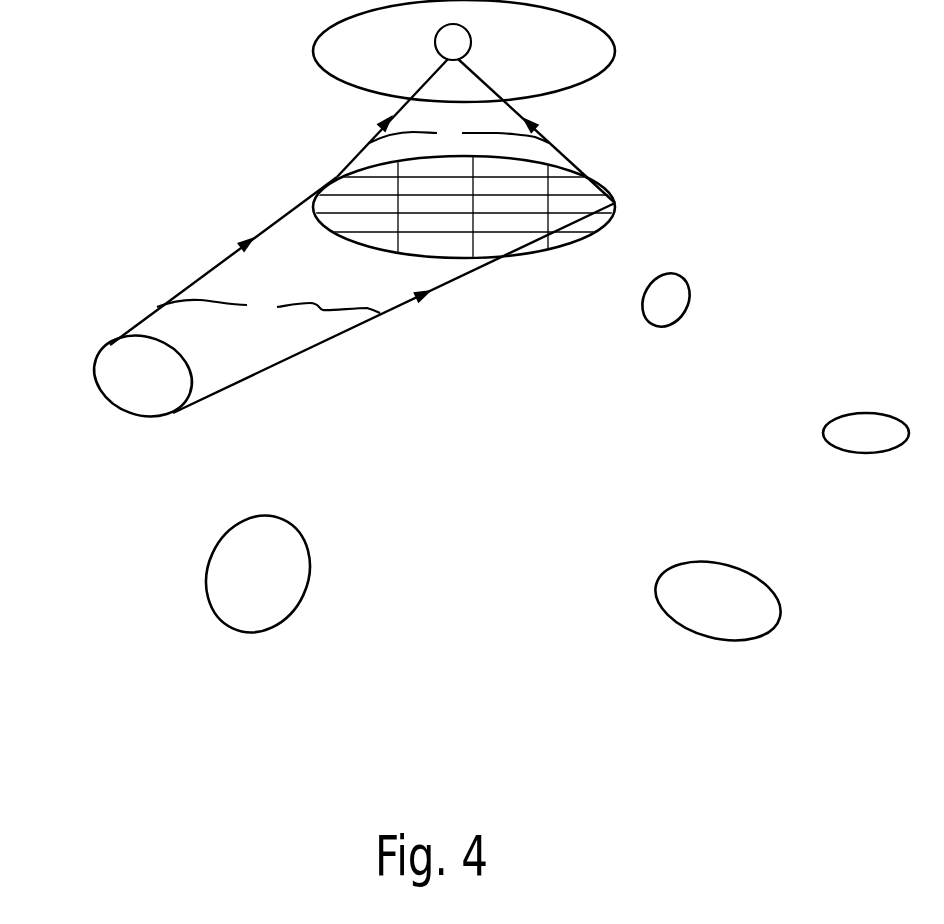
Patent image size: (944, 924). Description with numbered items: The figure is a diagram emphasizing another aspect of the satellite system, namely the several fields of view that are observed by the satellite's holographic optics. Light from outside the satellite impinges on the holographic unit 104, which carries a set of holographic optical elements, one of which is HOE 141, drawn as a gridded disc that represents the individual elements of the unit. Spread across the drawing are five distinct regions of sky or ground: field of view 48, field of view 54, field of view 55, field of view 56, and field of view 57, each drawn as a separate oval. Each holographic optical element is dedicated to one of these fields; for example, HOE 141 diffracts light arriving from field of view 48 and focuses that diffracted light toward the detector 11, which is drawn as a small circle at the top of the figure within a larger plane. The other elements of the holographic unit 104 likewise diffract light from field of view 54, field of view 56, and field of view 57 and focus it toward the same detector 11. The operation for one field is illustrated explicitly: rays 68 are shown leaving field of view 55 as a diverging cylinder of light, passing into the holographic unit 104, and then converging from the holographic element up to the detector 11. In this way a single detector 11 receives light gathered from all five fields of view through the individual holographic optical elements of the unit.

The detector 11 is at (453, 42).
The holographic unit 104 is at (330, 165).
The HOE 141 is at (331, 207).
The rays 68 is at (353, 220).
The field of view 55 is at (143, 375).
The field of view 56 is at (666, 300).
The field of view 57 is at (866, 433).
The field of view 48 is at (257, 573).
The field of view 54 is at (718, 601).